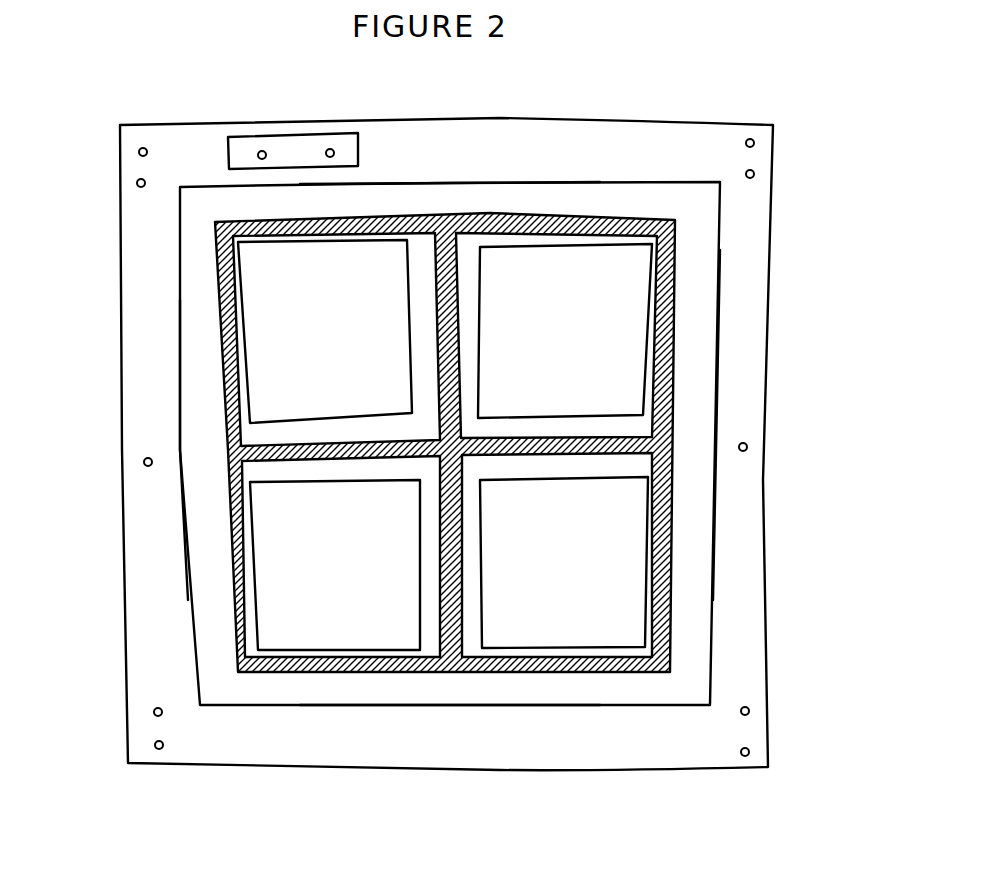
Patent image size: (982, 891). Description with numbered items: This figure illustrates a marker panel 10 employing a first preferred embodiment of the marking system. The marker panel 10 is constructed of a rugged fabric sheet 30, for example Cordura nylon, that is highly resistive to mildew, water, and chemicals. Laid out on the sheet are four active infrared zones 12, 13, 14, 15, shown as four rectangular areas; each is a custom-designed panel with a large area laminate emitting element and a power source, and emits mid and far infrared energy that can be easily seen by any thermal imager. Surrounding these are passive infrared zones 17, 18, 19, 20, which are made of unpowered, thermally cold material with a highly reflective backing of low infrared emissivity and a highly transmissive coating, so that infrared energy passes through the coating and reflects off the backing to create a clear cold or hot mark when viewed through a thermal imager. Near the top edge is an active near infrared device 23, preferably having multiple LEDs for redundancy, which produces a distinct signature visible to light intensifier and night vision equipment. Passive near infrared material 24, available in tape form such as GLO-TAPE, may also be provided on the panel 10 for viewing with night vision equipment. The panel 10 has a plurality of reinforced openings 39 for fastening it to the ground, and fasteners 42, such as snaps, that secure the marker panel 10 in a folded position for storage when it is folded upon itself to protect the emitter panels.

The marker panel 10 is at (727, 101).
The active infrared zone 12 is at (338, 346).
The active infrared zone 13 is at (580, 346).
The active infrared zone 14 is at (354, 583).
The active infrared zone 15 is at (590, 576).
The passive infrared zone 17 is at (700, 443).
The passive infrared zone 18 is at (466, 197).
The passive infrared zone 19 is at (193, 445).
The passive infrared zone 20 is at (448, 688).
The active near infrared device 23 is at (285, 133).
The passive near infrared material 24 is at (672, 288).
The fabric sheet 30 is at (745, 733).
The reinforced opening 39 is at (146, 468).
The fastener 42 is at (745, 705).